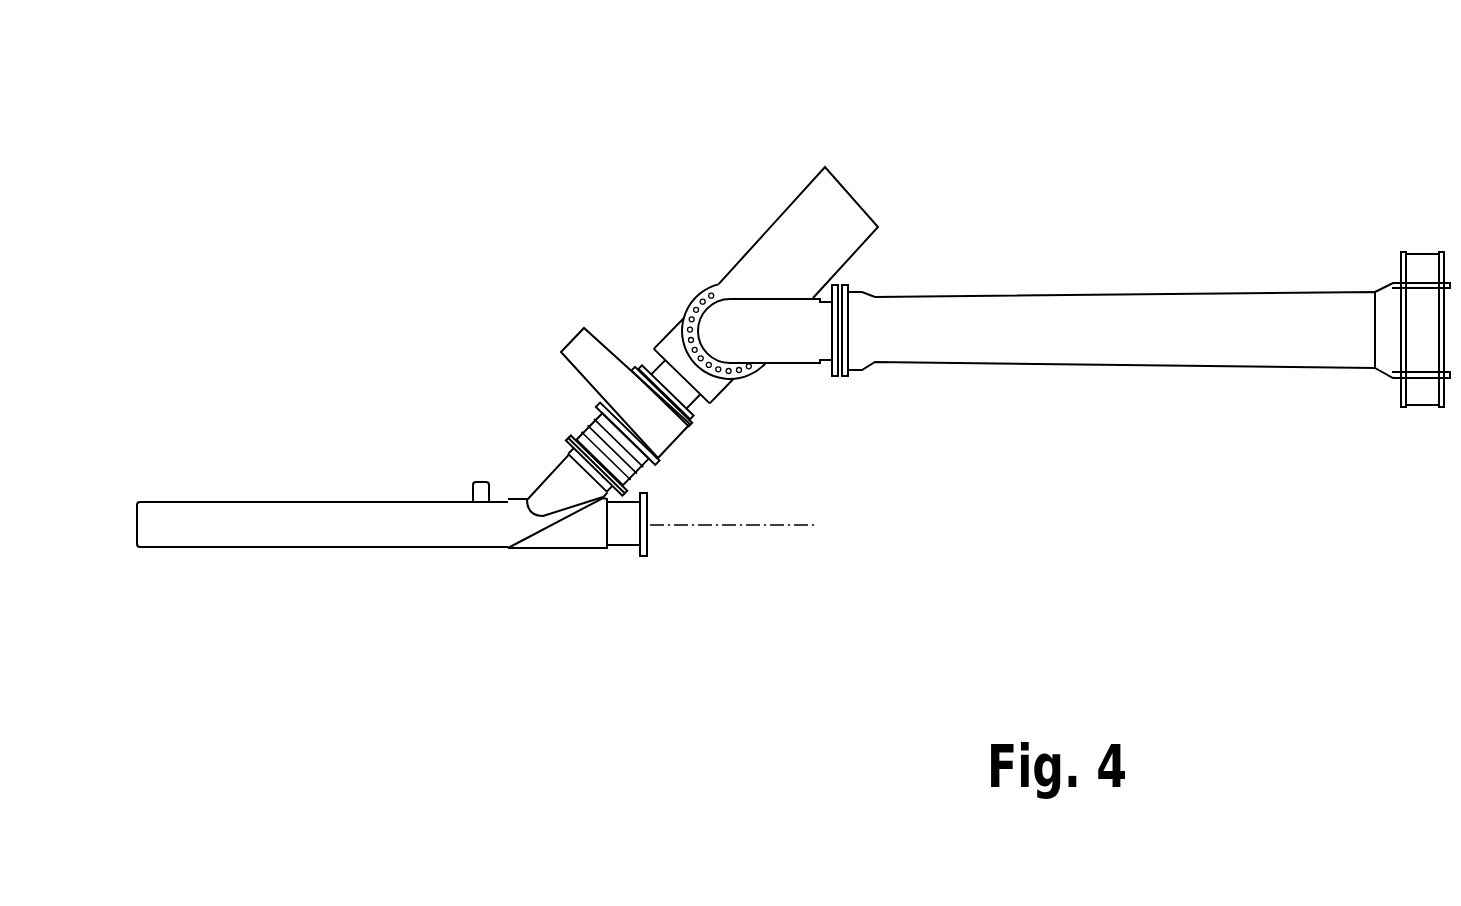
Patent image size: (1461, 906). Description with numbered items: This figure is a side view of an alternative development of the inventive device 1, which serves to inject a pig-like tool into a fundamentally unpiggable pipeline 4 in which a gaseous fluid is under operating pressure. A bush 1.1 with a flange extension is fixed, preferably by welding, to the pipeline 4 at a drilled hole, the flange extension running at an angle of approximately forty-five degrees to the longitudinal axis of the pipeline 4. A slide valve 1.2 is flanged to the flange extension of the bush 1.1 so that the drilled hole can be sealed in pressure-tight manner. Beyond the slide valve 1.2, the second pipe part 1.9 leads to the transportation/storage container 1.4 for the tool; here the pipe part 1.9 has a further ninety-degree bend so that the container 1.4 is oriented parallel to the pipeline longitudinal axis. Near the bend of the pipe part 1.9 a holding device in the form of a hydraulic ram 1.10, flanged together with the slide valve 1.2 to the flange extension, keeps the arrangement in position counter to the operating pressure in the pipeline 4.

The device 1 is at (802, 578).
The bush 1.1 is at (548, 560).
The slide valve 1.2 is at (597, 357).
The transportation/storage container 1.4 is at (1118, 310).
The second pipe part 1.9 is at (781, 342).
The hydraulic ram 1.10 is at (868, 172).
The pipeline 4 is at (318, 486).